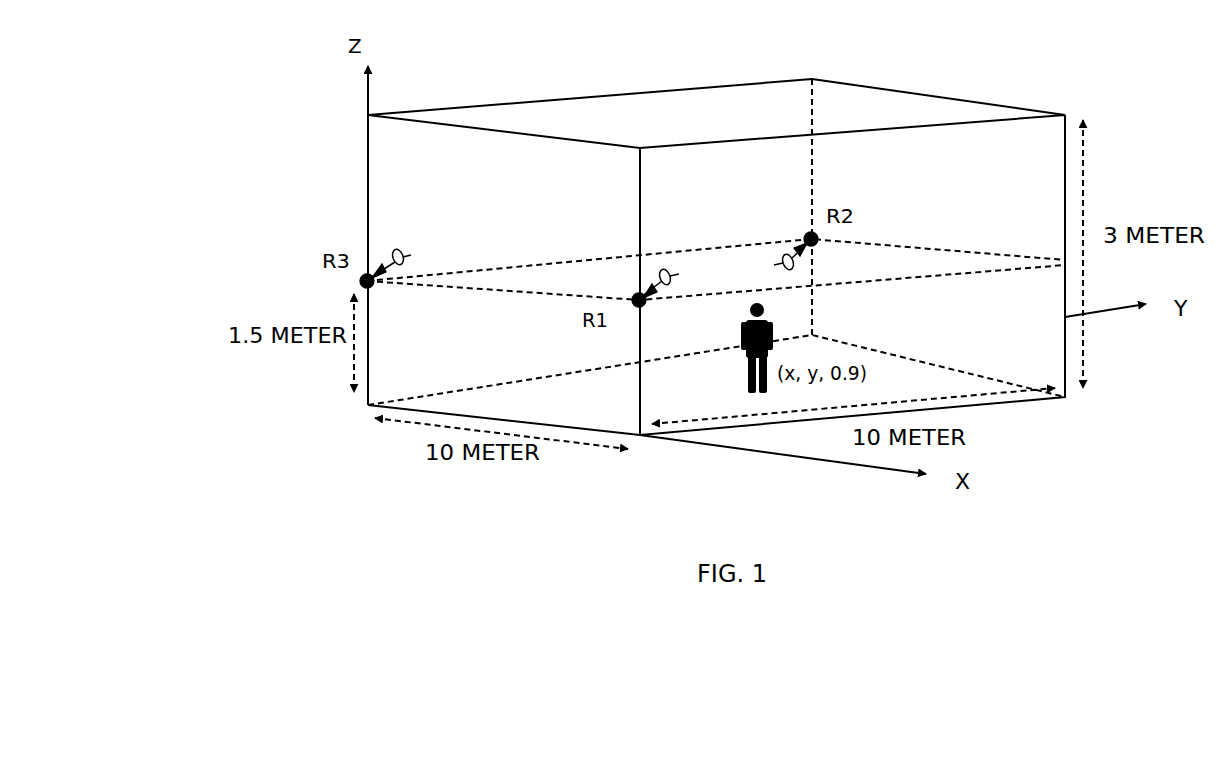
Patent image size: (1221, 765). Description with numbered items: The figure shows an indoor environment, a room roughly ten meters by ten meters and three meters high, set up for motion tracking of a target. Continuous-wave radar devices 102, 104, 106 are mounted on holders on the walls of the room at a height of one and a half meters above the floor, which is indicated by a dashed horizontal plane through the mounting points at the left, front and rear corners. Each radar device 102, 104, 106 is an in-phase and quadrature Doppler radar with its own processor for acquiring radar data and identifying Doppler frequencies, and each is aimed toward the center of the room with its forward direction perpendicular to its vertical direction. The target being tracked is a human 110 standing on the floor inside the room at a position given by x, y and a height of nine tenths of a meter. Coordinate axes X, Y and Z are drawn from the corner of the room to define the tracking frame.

The radar device 102 is at (404, 252).
The radar device 104 is at (779, 262).
The radar device 106 is at (673, 272).
The human 110 is at (764, 311).